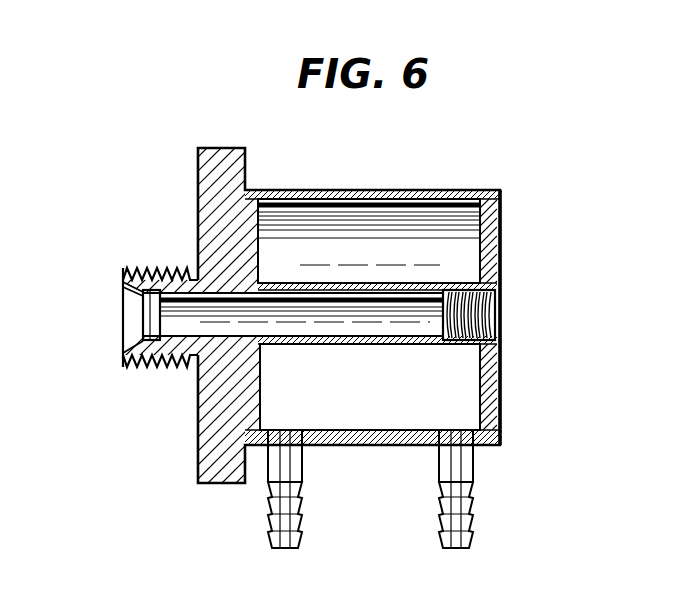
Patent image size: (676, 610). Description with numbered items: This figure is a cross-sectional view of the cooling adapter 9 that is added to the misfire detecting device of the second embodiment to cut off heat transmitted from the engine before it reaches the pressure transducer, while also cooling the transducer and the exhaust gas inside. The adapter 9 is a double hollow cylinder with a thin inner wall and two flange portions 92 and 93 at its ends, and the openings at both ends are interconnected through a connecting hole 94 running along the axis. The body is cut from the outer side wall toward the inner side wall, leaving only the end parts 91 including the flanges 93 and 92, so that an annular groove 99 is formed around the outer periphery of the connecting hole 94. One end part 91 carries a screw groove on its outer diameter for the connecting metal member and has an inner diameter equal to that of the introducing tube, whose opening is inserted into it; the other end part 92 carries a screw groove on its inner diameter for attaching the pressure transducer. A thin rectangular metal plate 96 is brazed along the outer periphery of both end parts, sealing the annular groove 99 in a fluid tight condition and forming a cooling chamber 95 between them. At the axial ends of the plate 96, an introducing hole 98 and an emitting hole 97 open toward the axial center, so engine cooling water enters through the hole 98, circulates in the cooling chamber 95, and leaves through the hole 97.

The cooling adapter 9 is at (142, 421).
The end part 91 is at (152, 316).
The flange portion 92 is at (505, 323).
The flange portion 93 is at (229, 165).
The connecting hole 94 is at (385, 320).
The cooling chamber 95 is at (392, 235).
The thin rectangular metal plate 96 is at (471, 190).
The emitting hole 97 is at (303, 495).
The introducing hole 98 is at (442, 487).
The annular groove 99 is at (490, 243).